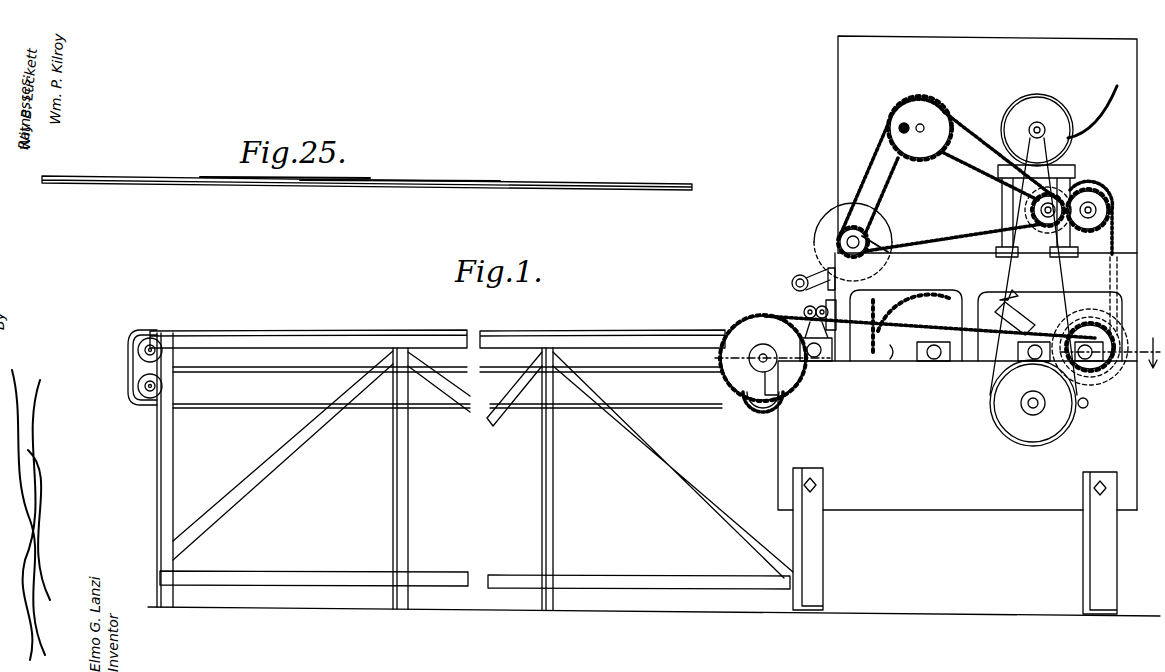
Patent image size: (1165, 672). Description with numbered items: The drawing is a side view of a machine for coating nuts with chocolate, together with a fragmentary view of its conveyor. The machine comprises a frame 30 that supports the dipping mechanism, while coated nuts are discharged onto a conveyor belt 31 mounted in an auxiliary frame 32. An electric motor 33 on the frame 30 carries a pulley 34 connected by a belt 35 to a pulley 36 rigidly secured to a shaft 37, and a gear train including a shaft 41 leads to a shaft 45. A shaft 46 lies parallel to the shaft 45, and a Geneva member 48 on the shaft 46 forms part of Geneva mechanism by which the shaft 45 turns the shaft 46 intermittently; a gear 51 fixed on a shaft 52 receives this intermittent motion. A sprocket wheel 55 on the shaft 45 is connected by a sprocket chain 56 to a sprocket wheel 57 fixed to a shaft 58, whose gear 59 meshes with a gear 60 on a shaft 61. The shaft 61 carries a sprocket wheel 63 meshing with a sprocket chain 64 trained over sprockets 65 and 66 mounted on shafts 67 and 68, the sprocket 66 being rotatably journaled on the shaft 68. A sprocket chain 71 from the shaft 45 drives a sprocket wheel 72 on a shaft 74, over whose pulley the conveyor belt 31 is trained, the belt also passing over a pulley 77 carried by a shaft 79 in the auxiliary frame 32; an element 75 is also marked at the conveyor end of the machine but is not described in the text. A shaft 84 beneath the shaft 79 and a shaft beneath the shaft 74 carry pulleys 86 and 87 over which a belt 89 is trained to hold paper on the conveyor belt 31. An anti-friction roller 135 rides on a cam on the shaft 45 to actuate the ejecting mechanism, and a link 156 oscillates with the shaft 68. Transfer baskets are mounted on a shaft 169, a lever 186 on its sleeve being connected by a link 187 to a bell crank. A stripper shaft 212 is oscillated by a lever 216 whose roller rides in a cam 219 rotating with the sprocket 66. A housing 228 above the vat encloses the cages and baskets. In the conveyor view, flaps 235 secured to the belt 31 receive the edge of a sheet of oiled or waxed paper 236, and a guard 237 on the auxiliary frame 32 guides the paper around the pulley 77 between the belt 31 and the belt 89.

In FIG. 1, the frame 30 is at (982, 493).
In FIG. 25, the conveyor belt 31 is at (506, 187).
In FIG. 1, the conveyor belt 31 is at (590, 333).
In FIG. 1, the auxiliary frame 32 is at (548, 452).
In FIG. 1, the electric motor 33 is at (1030, 106).
In FIG. 1, the pulley 34 is at (1046, 126).
In FIG. 1, the belt 35 is at (1000, 364).
In FIG. 1, the pulley 36 is at (1003, 405).
In FIG. 1, the shaft 37 is at (1036, 411).
In FIG. 1, the shaft 41 is at (1089, 403).
In FIG. 1, the shaft 45 is at (1096, 359).
In FIG. 1, the shaft 46 is at (1035, 359).
In FIG. 1, the Geneva member 48 is at (986, 296).
In FIG. 1, the gear 51 is at (893, 356).
In FIG. 1, the shaft 52 is at (934, 360).
In FIG. 1, the sprocket wheel 55 is at (1090, 340).
In FIG. 1, the sprocket chain 56 is at (1108, 272).
In FIG. 1, the sprocket wheel 57 is at (1103, 250).
In FIG. 1, the shaft 58 is at (1086, 204).
In FIG. 1, the gear 59 is at (1103, 200).
In FIG. 1, the gear 60 is at (1038, 215).
In FIG. 1, the shaft 61 is at (1036, 205).
In FIG. 1, the sprocket wheel 63 is at (955, 237).
In FIG. 1, the sprocket chain 64 is at (916, 98).
In FIG. 1, the sprocket 65 is at (940, 102).
In FIG. 1, the sprocket 66 is at (858, 230).
In FIG. 1, the shaft 67 is at (922, 130).
In FIG. 1, the shaft 68 is at (842, 232).
In FIG. 1, the sprocket chain 71 is at (921, 331).
In FIG. 1, the sprocket wheel 72 is at (730, 378).
In FIG. 1, the shaft 74 is at (770, 364).
In FIG. 1, the sprocket 75 is at (743, 353).
In FIG. 1, the pulley 77 is at (160, 332).
In FIG. 1, the shaft 79 is at (135, 355).
In FIG. 1, the shaft 84 is at (137, 383).
In FIG. 1, the pulley 86 is at (759, 411).
In FIG. 1, the pulley 87 is at (134, 395).
In FIG. 1, the belt 89 is at (249, 406).
In FIG. 1, the anti-friction roller 135 is at (820, 336).
In FIG. 1, the link 156 is at (880, 245).
In FIG. 1, the shaft 169 is at (815, 358).
In FIG. 1, the lever 186 is at (806, 312).
In FIG. 1, the link 187 is at (834, 308).
In FIG. 1, the shaft 212 is at (791, 284).
In FIG. 1, the lever 216 is at (822, 280).
In FIG. 1, the cam 219 is at (841, 217).
In FIG. 1, the housing 228 is at (1030, 31).
In FIG. 25, the flaps 235 is at (325, 184).
In FIG. 25, the sheet of oiled or waxed paper 236 is at (418, 183).
In FIG. 1, the guard 237 is at (136, 328).